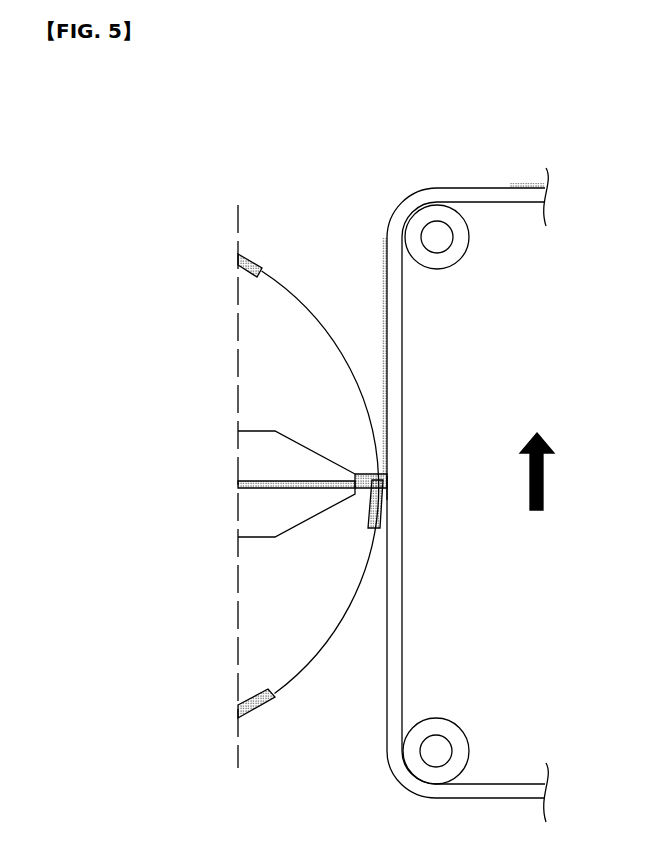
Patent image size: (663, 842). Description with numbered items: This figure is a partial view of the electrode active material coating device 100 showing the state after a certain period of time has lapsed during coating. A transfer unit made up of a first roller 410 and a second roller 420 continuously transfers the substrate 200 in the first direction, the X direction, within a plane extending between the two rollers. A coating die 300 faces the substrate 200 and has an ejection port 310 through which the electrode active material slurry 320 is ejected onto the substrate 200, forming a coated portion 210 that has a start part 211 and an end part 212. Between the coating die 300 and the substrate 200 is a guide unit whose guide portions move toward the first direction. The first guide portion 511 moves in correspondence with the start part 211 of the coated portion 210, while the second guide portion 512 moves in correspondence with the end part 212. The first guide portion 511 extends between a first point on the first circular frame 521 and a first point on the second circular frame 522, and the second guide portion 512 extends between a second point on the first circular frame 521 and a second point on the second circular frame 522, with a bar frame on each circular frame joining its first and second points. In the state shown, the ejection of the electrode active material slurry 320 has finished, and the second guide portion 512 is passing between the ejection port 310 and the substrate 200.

The electrode active material coating device 100 is at (331, 121).
The substrate 200 is at (421, 606).
The coated portion 210 is at (388, 370).
The start part of coated portion 211 is at (384, 232).
The end part of coated portion 212 is at (388, 494).
The coating die 300 is at (255, 460).
The ejection port 310 is at (323, 480).
The electrode active material slurry 320 is at (258, 490).
The first roller 410 is at (455, 252).
The second roller 420 is at (441, 731).
The first guide portion 511 is at (250, 259).
The second guide portion 512 is at (383, 510).
The first circular frame 521 is at (320, 465).
The second circular frame 522 is at (291, 292).